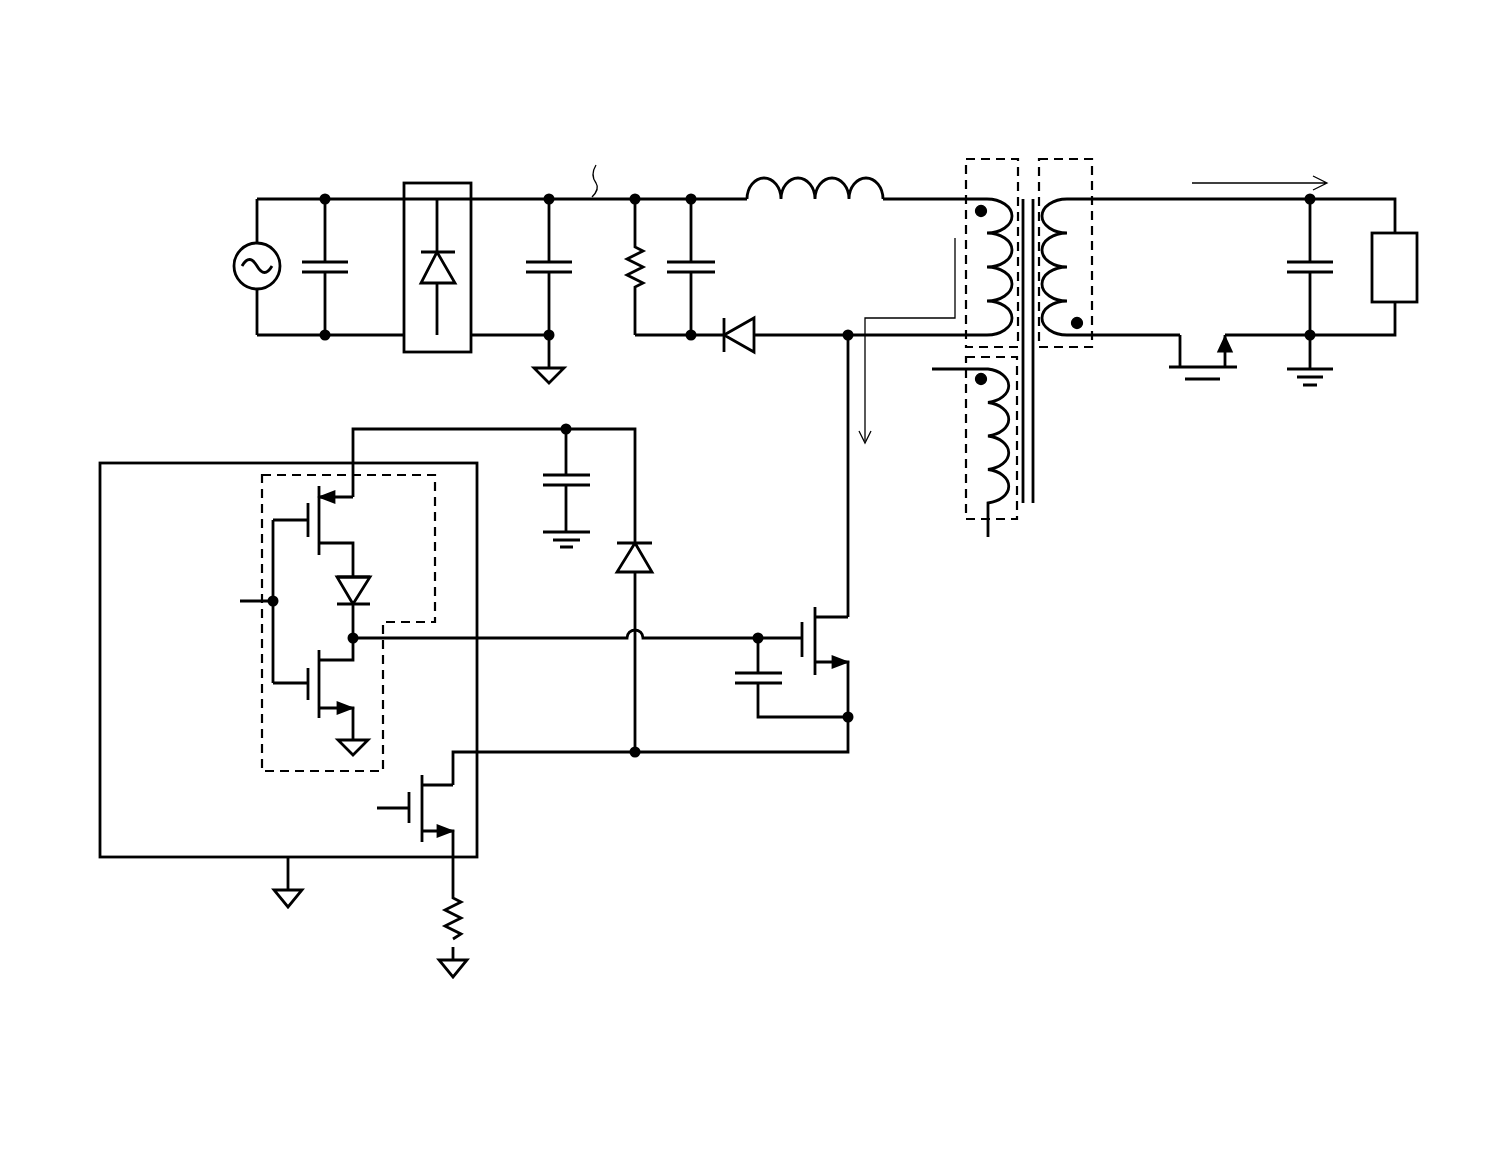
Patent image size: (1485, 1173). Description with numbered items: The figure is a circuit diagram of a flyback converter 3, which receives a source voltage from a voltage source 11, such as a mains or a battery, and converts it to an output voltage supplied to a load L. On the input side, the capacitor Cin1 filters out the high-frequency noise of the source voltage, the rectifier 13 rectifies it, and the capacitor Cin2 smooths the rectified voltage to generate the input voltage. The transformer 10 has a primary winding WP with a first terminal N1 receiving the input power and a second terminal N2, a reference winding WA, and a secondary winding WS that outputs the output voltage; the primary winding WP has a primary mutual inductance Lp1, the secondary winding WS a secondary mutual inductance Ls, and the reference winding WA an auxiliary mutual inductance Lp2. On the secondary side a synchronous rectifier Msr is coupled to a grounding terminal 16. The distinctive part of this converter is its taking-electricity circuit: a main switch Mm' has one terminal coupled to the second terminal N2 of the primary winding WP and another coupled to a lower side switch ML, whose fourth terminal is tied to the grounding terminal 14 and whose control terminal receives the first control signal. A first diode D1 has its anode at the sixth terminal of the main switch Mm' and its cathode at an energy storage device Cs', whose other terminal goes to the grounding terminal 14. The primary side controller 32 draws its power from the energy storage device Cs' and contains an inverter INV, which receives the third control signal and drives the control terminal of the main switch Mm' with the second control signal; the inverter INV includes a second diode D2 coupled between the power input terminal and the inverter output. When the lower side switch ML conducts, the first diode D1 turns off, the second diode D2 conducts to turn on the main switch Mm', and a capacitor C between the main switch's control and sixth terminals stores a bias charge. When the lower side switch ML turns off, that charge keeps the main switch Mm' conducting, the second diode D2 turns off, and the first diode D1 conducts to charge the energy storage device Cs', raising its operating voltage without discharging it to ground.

The flyback converter 3 is at (1330, 150).
The transformer 10 is at (1029, 316).
The voltage source 11 is at (231, 268).
The rectifier 13 is at (436, 182).
The grounding terminal 14 is at (537, 376).
The grounding terminal 16 is at (1330, 369).
The primary side controller 32 is at (198, 462).
The capacitor Cin1 is at (340, 260).
The capacitor Cin2 is at (598, 238).
The primary mutual inductance Lp1 is at (1002, 198).
The auxiliary mutual inductance Lp2 is at (1000, 503).
The secondary mutual inductance Ls is at (1055, 198).
The first terminal N1 is at (981, 197).
The second terminal N2 is at (983, 334).
The primary winding WP is at (966, 191).
The secondary winding WS is at (1092, 176).
The reference winding WA is at (966, 468).
The load L is at (1418, 268).
The synchronous rectifier Msr is at (1178, 352).
The inverter INV is at (262, 516).
The first diode D1 is at (652, 557).
The second diode D2 is at (370, 590).
The lower side switch ML is at (438, 784).
The energy storage device Cs' is at (537, 457).
The main switch Mm' is at (818, 633).
The capacitor C is at (736, 671).